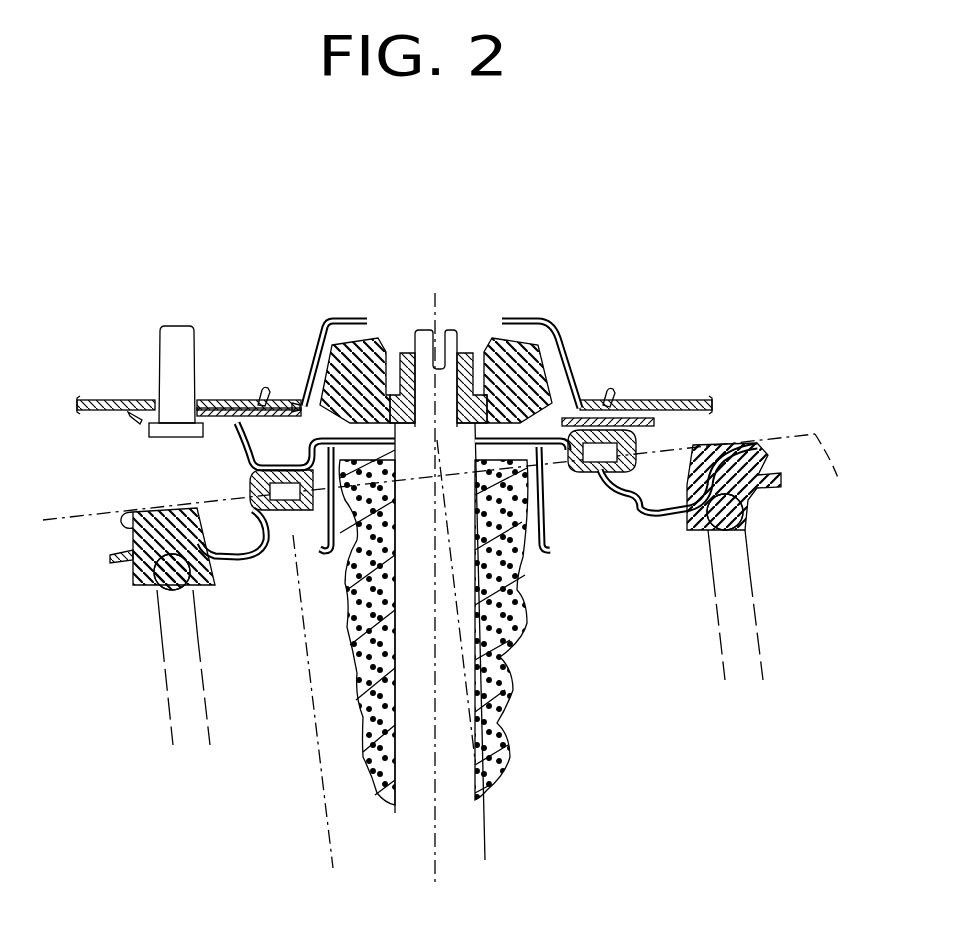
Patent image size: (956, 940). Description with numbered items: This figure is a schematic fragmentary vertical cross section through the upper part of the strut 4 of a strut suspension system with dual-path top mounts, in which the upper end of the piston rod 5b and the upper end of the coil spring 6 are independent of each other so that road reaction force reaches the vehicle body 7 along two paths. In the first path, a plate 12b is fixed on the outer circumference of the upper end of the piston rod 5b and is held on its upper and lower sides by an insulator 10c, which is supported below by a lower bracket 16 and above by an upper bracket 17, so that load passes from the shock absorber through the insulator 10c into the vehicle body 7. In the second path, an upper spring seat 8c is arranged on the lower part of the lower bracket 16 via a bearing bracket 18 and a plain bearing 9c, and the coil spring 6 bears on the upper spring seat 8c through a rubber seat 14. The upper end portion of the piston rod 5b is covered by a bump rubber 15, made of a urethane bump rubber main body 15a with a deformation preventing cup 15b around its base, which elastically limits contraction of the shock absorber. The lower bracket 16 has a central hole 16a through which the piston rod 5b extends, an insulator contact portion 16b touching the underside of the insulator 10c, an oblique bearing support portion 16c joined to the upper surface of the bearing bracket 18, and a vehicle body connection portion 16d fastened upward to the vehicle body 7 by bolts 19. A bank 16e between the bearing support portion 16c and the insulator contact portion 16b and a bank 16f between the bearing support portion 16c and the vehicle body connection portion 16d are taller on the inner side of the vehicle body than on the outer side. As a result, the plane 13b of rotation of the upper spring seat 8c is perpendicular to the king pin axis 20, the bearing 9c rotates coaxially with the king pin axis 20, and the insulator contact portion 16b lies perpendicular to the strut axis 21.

The strut 4 is at (333, 717).
The piston rod 5b is at (473, 667).
The coil spring 6 is at (763, 640).
The vehicle body 7 is at (107, 397).
The upper spring seat 8c is at (733, 447).
The bearing 9c is at (247, 480).
The insulator 10c is at (560, 393).
The plate 12b is at (386, 393).
The plane of rotation 13b is at (452, 477).
The rubber seat 14 is at (757, 488).
The bump rubber 15 is at (574, 623).
The bump rubber main body 15a is at (523, 590).
The deformation preventing cup 15b is at (545, 510).
The lower bracket 16 is at (590, 400).
The hole 16a is at (387, 440).
The insulator contact portion 16b is at (290, 403).
The bearing support portion 16c is at (262, 403).
The vehicle body connection portion 16d is at (230, 440).
The bank 16e is at (292, 540).
The bank 16f is at (233, 397).
The upper bracket 17 is at (325, 318).
The bearing bracket 18 is at (670, 410).
The bolts 19 is at (177, 324).
The king pin axis 20 is at (485, 838).
The strut axis 21 is at (433, 866).